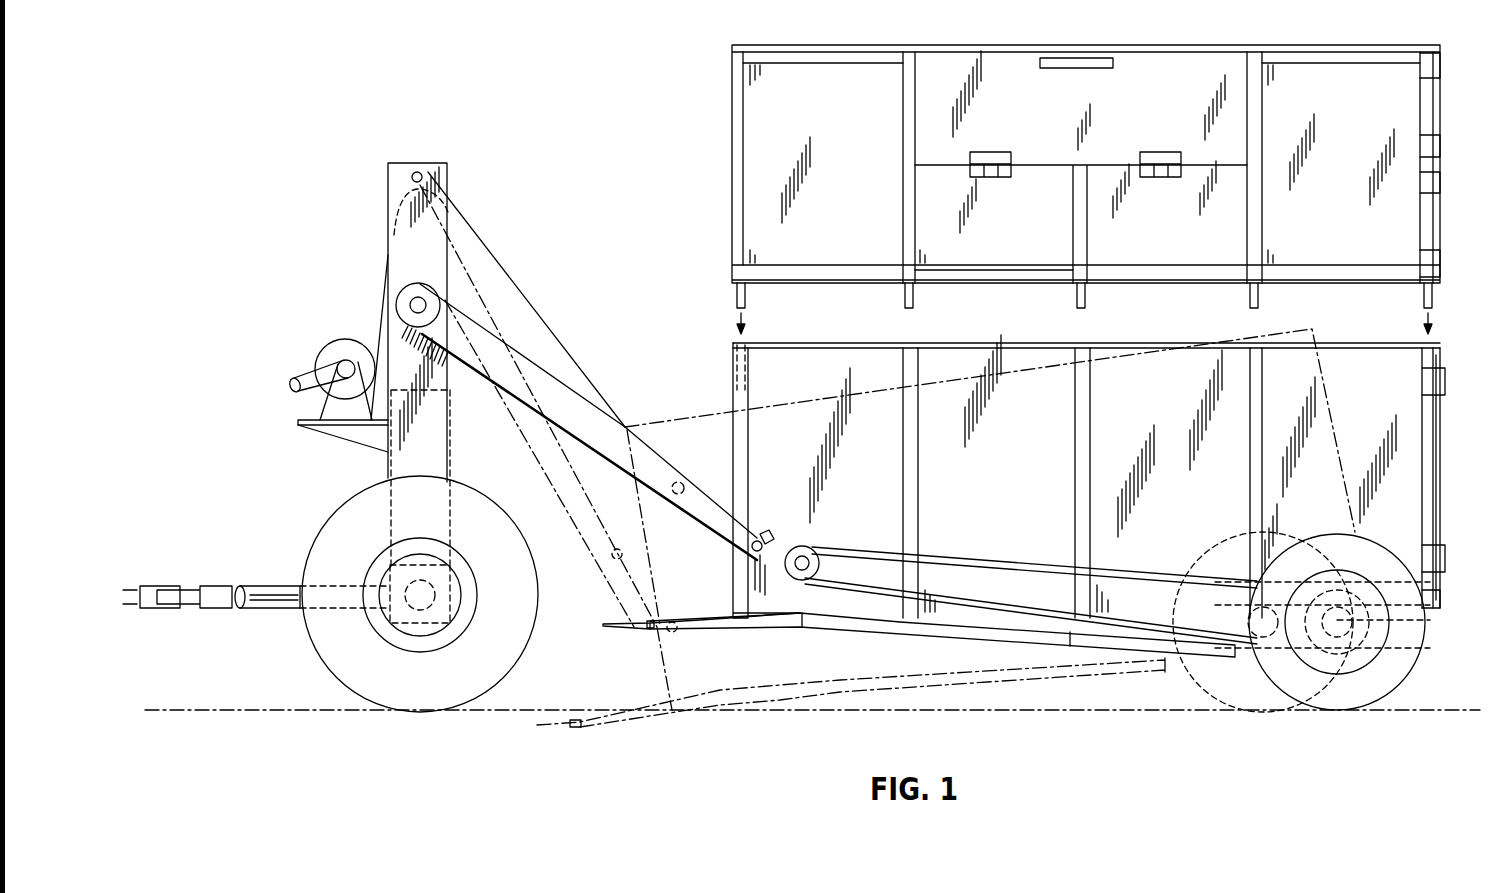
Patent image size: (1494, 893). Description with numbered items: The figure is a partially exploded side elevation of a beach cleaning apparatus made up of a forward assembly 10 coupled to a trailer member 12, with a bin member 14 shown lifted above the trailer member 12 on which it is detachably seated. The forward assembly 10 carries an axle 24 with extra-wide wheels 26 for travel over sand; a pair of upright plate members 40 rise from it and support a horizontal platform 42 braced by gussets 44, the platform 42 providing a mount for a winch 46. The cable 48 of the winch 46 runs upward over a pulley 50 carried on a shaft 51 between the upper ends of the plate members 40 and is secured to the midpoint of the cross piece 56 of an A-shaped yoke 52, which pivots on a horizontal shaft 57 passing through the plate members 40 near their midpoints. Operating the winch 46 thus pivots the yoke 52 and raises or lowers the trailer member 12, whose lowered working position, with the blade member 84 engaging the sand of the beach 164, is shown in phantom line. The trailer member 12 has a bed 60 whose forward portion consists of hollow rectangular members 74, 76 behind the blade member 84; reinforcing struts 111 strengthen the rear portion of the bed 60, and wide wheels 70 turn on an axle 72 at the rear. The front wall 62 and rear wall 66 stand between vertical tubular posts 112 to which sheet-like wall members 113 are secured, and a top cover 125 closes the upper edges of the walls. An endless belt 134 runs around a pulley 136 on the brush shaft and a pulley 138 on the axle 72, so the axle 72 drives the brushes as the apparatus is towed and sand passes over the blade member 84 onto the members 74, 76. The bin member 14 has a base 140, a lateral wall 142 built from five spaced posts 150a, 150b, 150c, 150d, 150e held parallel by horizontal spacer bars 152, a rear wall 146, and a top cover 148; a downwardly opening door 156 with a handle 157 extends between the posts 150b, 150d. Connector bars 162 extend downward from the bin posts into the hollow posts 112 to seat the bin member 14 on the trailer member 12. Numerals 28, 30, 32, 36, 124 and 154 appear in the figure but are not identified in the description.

The forward assembly 10 is at (370, 265).
The trailer member 12 is at (1443, 503).
The bin member 14 is at (728, 98).
The axle 24 is at (436, 580).
The wheels 26 is at (429, 683).
The tongue 28 is at (264, 585).
The hitch 30 is at (157, 585).
The mast base 32 is at (392, 463).
The hub 36 is at (455, 563).
The vertical plate members 40 is at (428, 253).
The horizontal platform 42 is at (298, 422).
The gussets 44 is at (345, 433).
The winch 46 is at (328, 355).
The cable 48 is at (520, 283).
The pulley 50 is at (396, 206).
The shaft 51 is at (417, 171).
The A-shaped yoke 52 is at (537, 360).
The cross piece 56 is at (677, 496).
The horizontal shaft 57 is at (428, 300).
The bed 60 is at (898, 643).
The front wall 62 is at (731, 398).
The rear wall 66 is at (1438, 455).
The wide wheels 70 is at (1182, 680).
The axle 72 is at (1400, 648).
The hollow rectangular member 74 is at (703, 627).
The hollow rectangular member 76 is at (768, 624).
The blade member 84 is at (633, 629).
The reinforcing struts 111 is at (1440, 598).
The vertical tubular posts 112 is at (750, 445).
The wall members 113 is at (1167, 439).
The pin 124 is at (761, 540).
The top cover 125 is at (1003, 346).
The endless belt 134 is at (1006, 562).
The pulley 136 is at (796, 578).
The pulley 138 is at (1385, 622).
The base 140 is at (1012, 285).
The lateral wall 142 is at (770, 194).
The rear wall 146 is at (1440, 211).
The top cover 148 is at (868, 47).
The post 150a is at (742, 172).
The post 150b is at (902, 183).
The post 150c is at (1073, 194).
The post 150d is at (1248, 195).
The post 150e is at (1420, 120).
The horizontal spacer bars 152 is at (835, 62).
The hinge 154 is at (1170, 225).
The door 156 is at (1185, 115).
The handle 157 is at (1083, 68).
The connector bars 162 is at (733, 292).
The beach 164 is at (213, 710).